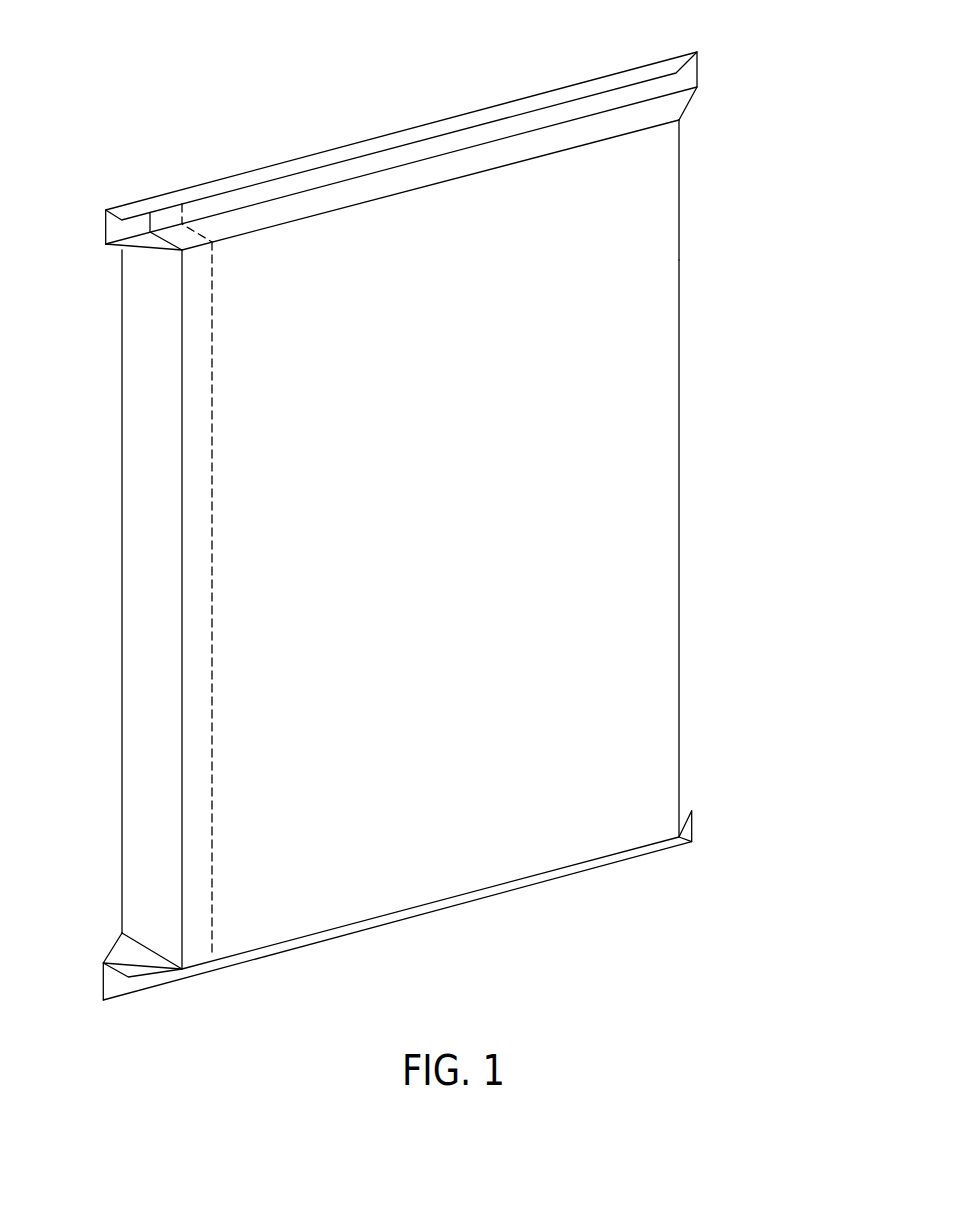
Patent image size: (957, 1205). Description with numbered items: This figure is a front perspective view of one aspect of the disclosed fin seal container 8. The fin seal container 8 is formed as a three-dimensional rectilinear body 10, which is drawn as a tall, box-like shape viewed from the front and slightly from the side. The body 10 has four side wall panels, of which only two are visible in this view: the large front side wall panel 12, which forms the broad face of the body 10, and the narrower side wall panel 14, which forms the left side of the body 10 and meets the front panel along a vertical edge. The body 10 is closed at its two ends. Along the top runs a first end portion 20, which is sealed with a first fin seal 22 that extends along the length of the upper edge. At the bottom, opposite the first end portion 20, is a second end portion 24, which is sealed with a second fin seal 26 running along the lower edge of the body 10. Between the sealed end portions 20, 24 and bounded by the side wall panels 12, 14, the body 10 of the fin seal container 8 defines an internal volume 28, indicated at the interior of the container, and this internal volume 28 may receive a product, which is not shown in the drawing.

The fin seal container 8 is at (193, 110).
The rectilinear body 10 is at (680, 272).
The side wall panel 12 is at (324, 609).
The side wall panel 14 is at (167, 597).
The first end portion 20 is at (719, 79).
The first fin seal 22 is at (413, 153).
The second end portion 24 is at (715, 835).
The second fin seal 26 is at (463, 905).
The internal volume 28 is at (647, 217).